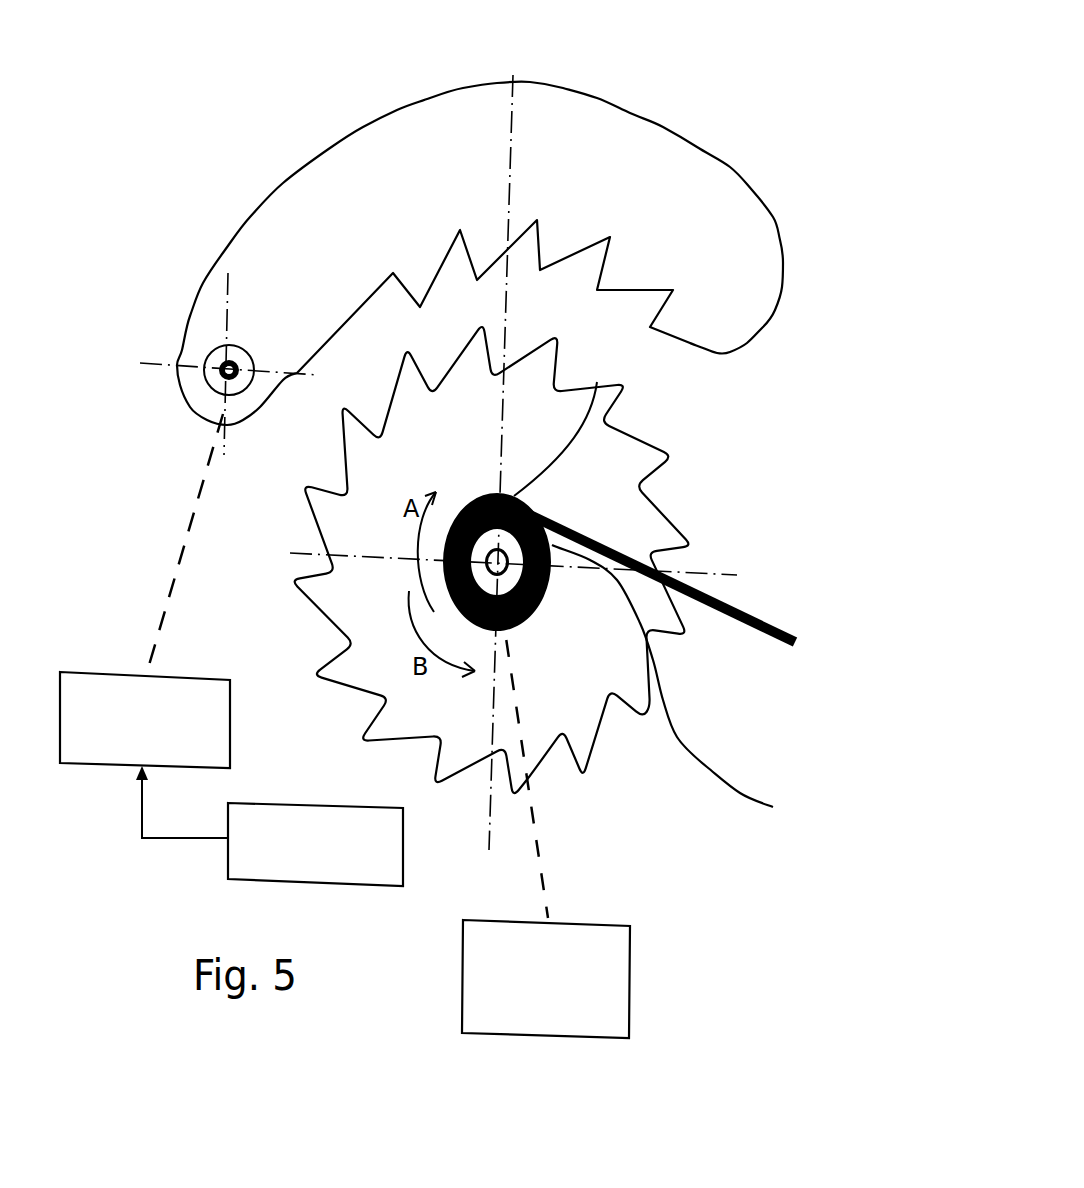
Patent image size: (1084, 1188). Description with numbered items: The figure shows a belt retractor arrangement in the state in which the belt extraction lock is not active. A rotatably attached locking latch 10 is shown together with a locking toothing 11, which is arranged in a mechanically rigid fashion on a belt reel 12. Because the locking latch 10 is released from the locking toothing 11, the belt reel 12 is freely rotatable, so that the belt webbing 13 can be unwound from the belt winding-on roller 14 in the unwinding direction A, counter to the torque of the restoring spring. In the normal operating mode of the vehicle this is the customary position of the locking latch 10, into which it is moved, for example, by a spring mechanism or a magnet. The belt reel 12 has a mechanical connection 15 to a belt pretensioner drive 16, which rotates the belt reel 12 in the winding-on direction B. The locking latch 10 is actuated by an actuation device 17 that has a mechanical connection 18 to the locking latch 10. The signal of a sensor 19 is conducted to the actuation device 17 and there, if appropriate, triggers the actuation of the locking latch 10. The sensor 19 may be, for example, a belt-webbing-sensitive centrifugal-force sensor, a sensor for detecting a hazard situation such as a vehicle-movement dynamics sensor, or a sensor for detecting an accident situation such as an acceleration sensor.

The locking latch 10 is at (647, 170).
The locking toothing 11 is at (553, 673).
The belt reel 12 is at (598, 382).
The belt webbing 13 is at (788, 632).
The belt winding-on roller 14 is at (691, 688).
The mechanical connection 15 is at (530, 840).
The belt pretensioner drive 16 is at (630, 998).
The actuation device 17 is at (217, 672).
The mechanical connection 18 is at (180, 557).
The sensor 19 is at (273, 803).